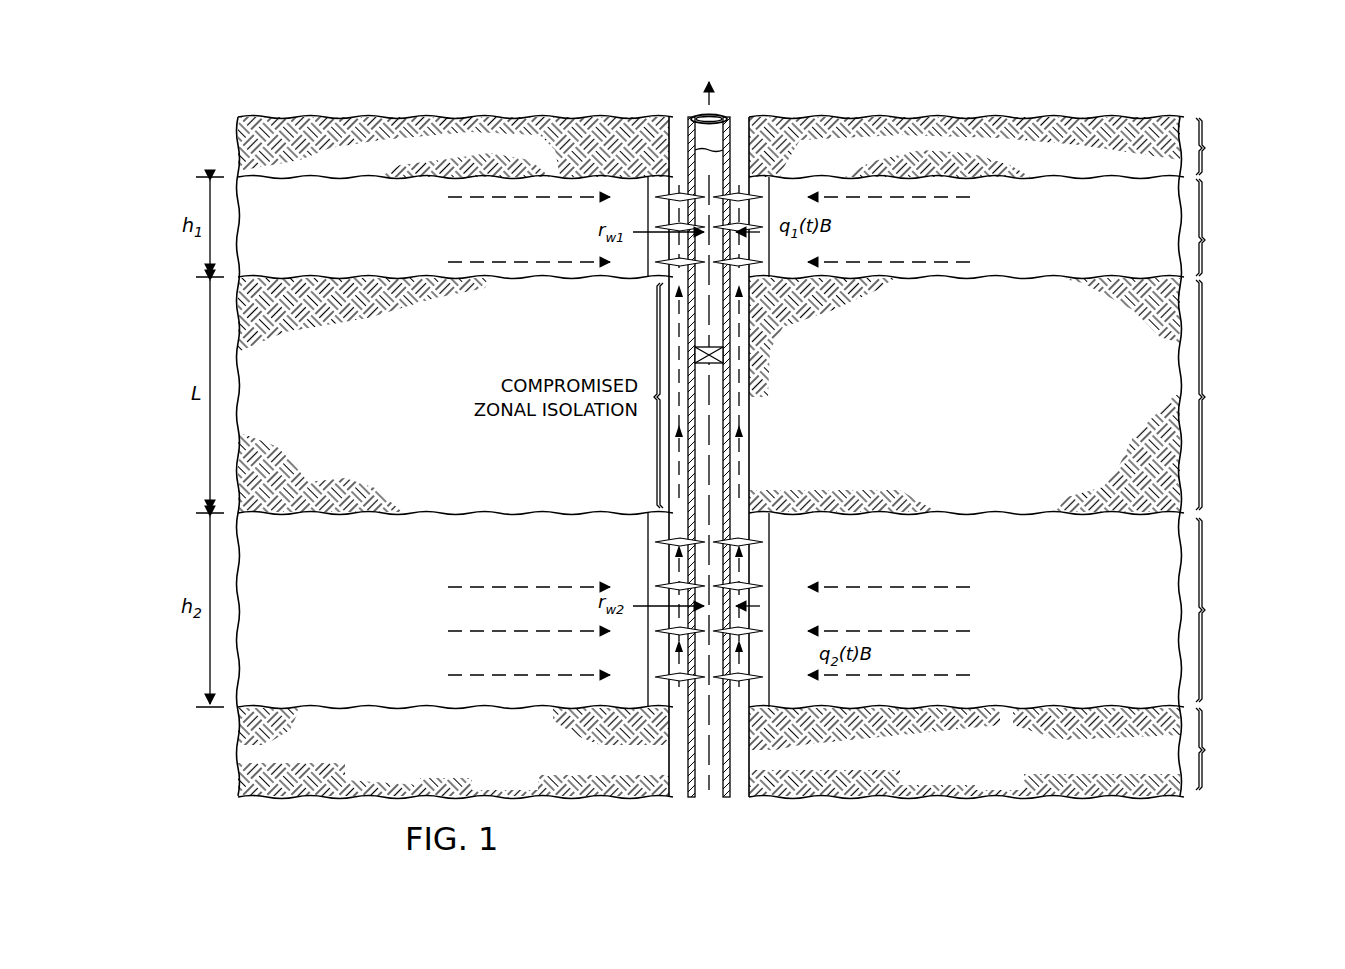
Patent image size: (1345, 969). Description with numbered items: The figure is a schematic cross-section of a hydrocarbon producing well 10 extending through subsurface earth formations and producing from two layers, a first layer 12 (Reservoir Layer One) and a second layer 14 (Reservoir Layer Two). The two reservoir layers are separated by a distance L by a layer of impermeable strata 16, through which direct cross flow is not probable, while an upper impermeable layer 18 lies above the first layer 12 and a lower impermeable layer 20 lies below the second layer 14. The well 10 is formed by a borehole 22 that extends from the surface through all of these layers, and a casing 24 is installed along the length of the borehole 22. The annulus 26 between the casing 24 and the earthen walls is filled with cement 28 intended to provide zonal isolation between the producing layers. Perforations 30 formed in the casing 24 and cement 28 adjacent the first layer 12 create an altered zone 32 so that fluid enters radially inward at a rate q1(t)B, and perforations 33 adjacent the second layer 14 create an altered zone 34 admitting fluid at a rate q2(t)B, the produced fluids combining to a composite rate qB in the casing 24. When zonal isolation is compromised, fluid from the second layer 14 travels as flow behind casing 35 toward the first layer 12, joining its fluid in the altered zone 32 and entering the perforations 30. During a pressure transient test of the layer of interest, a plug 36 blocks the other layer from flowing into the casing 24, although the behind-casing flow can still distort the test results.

The hydrocarbon producing well 10 is at (730, 93).
The first layer 12 is at (775, 226).
The second layer 14 is at (775, 607).
The layer of impermeable strata 16 is at (788, 394).
The upper impermeable layer 18 is at (788, 131).
The lower impermeable layer 20 is at (788, 758).
The borehole 22 is at (745, 800).
The casing 24 is at (714, 800).
The annulus 26 is at (690, 818).
The cement 28 is at (697, 112).
The perforations 30 is at (642, 178).
The altered zone 32 is at (645, 278).
The perforations 33 is at (662, 586).
The altered zone 34 is at (648, 515).
The flow behind casing 35 is at (742, 470).
The plug 36 is at (709, 370).